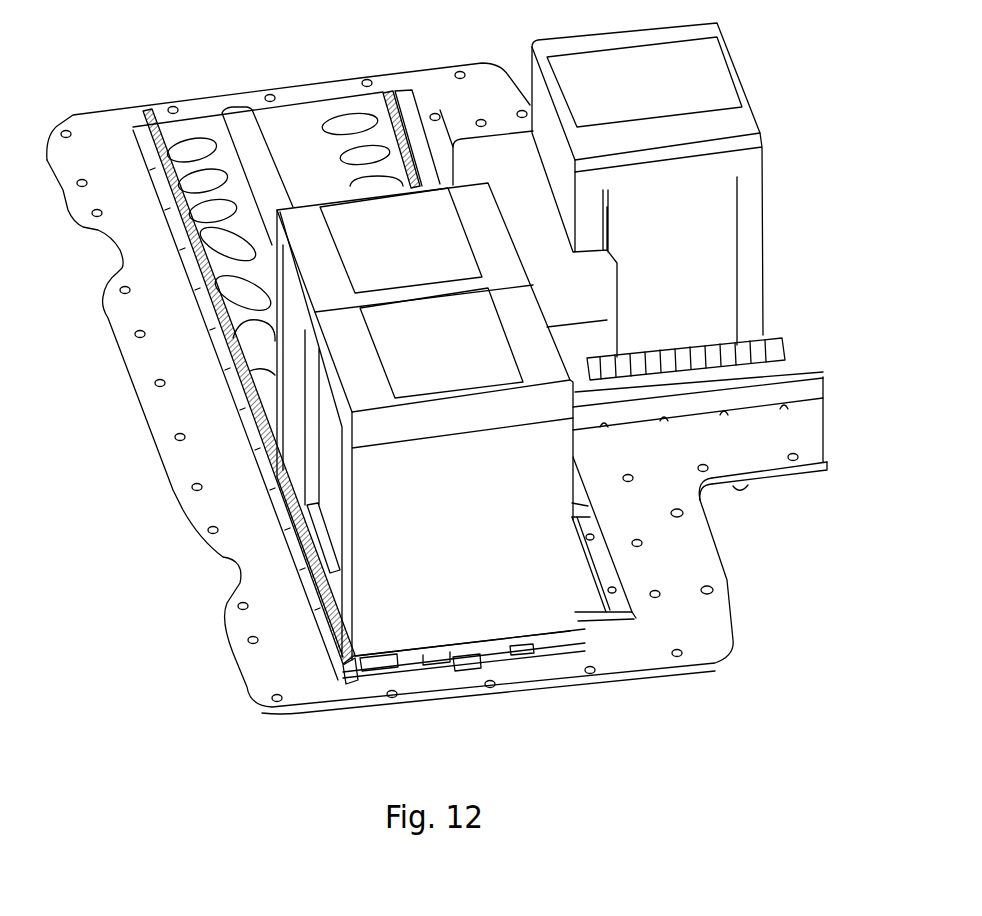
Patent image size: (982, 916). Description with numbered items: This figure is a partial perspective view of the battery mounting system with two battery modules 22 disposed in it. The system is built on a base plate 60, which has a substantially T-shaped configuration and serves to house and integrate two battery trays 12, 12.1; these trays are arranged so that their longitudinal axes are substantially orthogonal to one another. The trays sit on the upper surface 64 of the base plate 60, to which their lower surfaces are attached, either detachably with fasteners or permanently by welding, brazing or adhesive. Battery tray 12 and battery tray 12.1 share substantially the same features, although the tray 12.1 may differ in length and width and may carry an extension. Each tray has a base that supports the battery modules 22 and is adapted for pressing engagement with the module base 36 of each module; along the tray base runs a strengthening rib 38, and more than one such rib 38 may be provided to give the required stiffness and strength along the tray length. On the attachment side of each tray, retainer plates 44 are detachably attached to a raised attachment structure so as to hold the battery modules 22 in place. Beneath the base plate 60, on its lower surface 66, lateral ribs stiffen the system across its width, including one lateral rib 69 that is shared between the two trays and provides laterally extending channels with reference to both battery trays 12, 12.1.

The battery tray 12 is at (639, 645).
The battery tray 12.1 is at (808, 370).
The battery module 22 is at (768, 187).
The module base 36 is at (357, 670).
The strengthening rib 38 is at (440, 660).
The retainer plate 44 is at (607, 577).
The base plate 60 is at (803, 478).
The upper surface 64 is at (807, 433).
The lower surface 66 is at (820, 474).
The lateral rib 69 is at (753, 494).